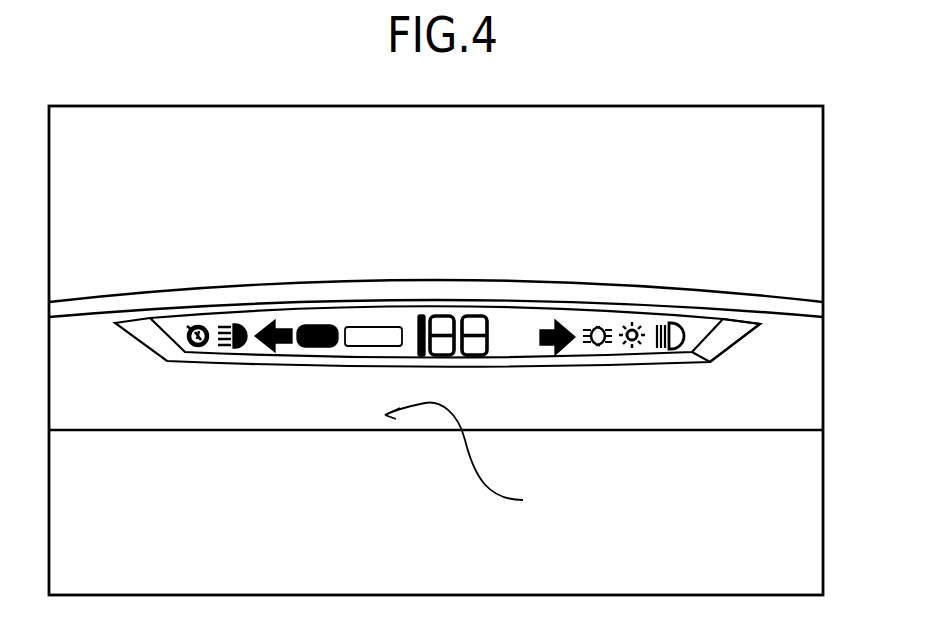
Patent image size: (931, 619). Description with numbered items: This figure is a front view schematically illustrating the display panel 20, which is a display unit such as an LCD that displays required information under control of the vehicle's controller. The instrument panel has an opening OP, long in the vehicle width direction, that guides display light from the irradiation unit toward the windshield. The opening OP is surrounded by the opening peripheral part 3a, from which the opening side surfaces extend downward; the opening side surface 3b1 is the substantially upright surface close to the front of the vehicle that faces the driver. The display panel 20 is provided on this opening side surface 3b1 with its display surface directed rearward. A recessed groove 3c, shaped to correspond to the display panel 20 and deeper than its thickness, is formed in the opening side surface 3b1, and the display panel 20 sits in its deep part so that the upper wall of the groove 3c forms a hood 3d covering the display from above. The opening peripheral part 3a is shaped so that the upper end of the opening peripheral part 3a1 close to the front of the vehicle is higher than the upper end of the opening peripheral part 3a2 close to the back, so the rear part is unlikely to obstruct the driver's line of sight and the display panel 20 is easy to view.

The opening side surface 3b1 is at (85, 372).
The opening peripheral part 3a is at (436, 338).
The opening peripheral part close to the front side of the vehicle 3a1 is at (492, 305).
The opening peripheral part close to the back side of the vehicle 3a2 is at (538, 431).
The recessed groove 3c is at (726, 336).
The hood 3d is at (587, 316).
The display panel 20 is at (373, 323).
The opening OP is at (477, 458).